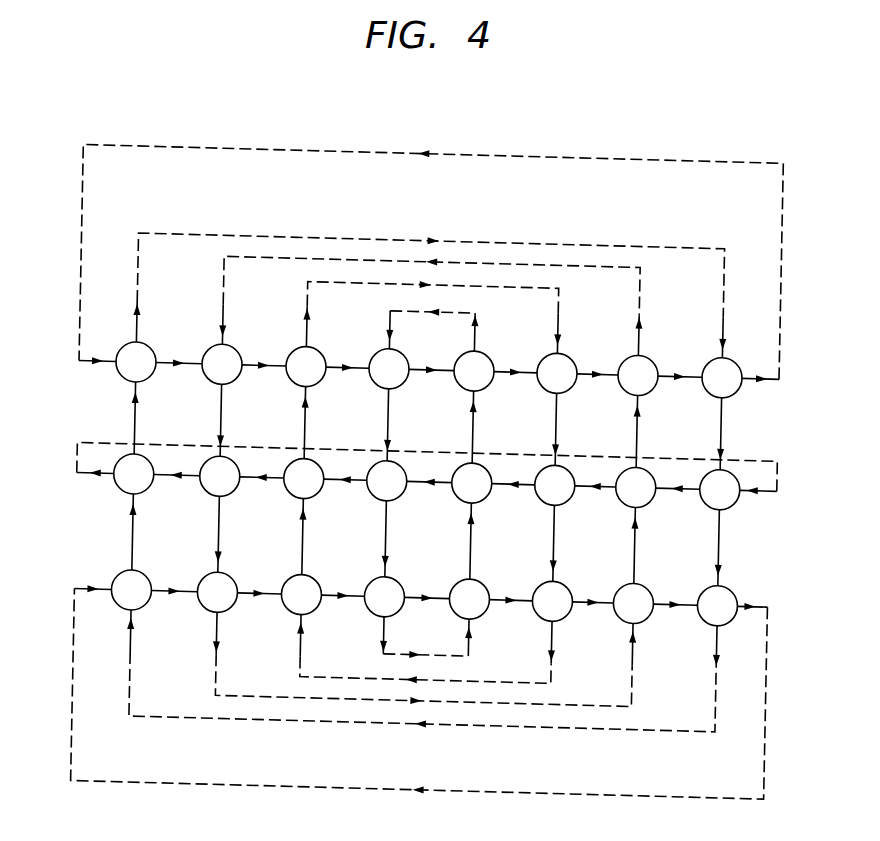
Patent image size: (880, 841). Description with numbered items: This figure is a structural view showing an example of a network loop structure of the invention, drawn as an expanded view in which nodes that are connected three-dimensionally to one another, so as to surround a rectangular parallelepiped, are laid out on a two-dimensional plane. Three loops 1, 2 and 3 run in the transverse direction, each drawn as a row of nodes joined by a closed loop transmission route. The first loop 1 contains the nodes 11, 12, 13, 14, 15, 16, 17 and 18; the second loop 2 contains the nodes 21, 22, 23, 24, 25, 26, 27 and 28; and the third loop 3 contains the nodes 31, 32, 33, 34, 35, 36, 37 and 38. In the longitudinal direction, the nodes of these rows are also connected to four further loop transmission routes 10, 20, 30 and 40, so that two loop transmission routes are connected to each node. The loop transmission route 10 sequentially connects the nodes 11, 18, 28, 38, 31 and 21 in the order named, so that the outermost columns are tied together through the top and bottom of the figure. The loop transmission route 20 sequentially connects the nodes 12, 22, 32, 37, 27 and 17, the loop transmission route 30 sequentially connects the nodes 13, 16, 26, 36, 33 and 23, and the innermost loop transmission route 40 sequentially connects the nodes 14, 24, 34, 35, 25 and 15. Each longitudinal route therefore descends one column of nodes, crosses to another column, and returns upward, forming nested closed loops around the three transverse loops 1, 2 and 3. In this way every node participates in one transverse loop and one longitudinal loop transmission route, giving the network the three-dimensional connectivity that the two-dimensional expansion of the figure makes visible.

The loop 1 is at (760, 361).
The loop 2 is at (766, 472).
The loop 3 is at (752, 589).
The loop transmission route 10 is at (141, 322).
The loop transmission route 20 is at (225, 322).
The loop transmission route 30 is at (309, 322).
The loop transmission route 40 is at (407, 298).
The node 11 is at (136, 361).
The node 12 is at (222, 364).
The node 13 is at (306, 366).
The node 14 is at (389, 368).
The node 15 is at (474, 371).
The node 16 is at (557, 373).
The node 17 is at (638, 375).
The node 18 is at (722, 377).
The node 21 is at (133, 473).
The node 22 is at (219, 476).
The node 23 is at (303, 478).
The node 24 is at (386, 480).
The node 25 is at (471, 483).
The node 26 is at (554, 485).
The node 27 is at (635, 487).
The node 28 is at (719, 489).
The node 31 is at (131, 589).
The node 32 is at (217, 592).
The node 33 is at (301, 594).
The node 34 is at (384, 596).
The node 35 is at (469, 599).
The node 36 is at (552, 601).
The node 37 is at (633, 603).
The node 38 is at (717, 605).